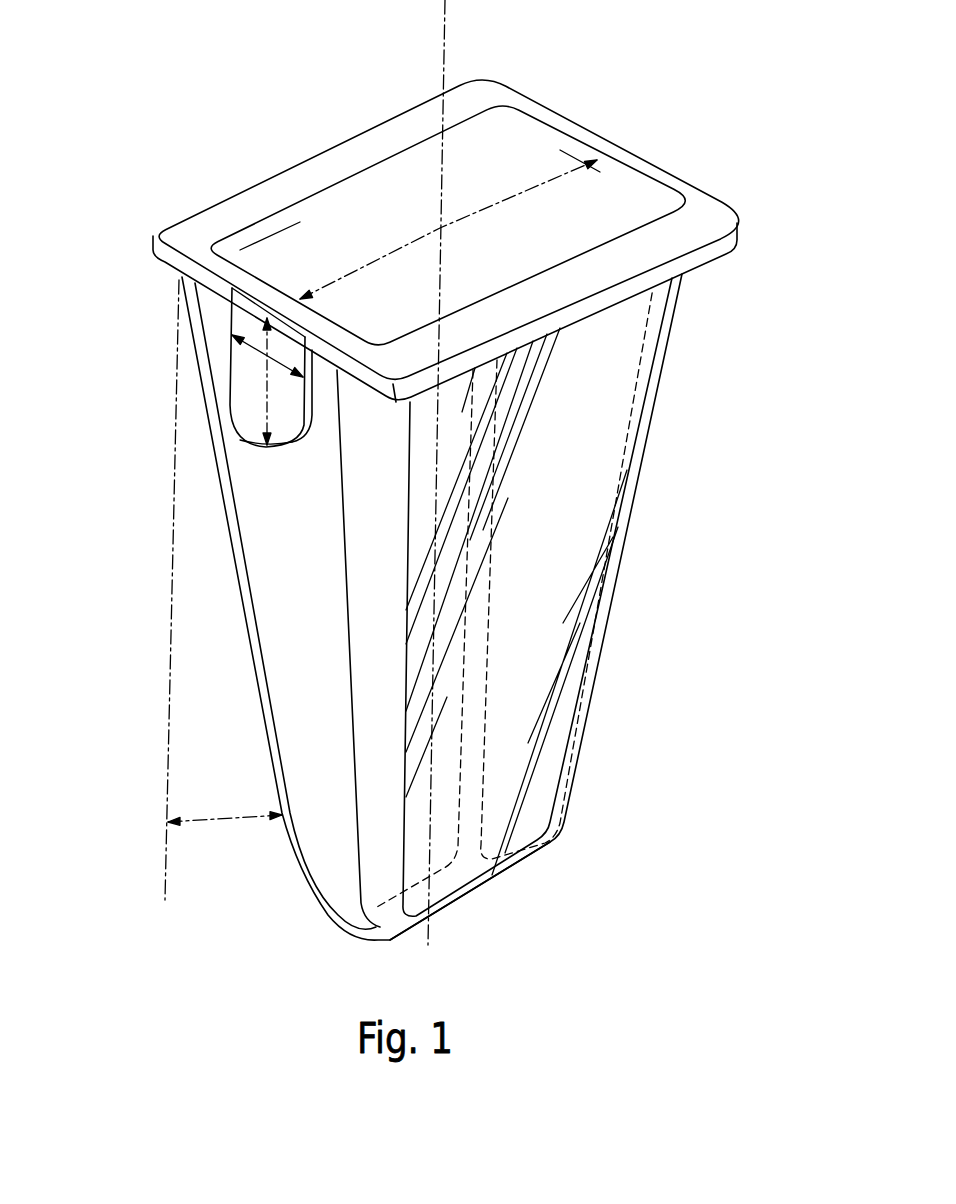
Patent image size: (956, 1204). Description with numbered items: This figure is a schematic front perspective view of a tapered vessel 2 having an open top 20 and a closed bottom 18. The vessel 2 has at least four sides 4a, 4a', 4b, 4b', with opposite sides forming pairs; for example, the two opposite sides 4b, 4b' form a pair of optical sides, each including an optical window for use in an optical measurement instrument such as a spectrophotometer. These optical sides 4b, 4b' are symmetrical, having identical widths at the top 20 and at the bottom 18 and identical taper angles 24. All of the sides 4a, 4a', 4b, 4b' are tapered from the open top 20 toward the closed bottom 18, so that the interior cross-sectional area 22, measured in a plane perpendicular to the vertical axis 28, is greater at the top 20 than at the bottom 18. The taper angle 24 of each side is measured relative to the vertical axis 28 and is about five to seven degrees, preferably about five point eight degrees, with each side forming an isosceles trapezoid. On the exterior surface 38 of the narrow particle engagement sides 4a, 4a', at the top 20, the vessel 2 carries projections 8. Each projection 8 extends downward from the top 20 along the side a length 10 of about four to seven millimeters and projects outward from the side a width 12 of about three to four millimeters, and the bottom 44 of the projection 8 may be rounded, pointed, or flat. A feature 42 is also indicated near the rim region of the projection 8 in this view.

The vessel 2 is at (668, 131).
The side 4a is at (324, 648).
The side 4b is at (537, 597).
The side 4a' is at (604, 140).
The side 4b' is at (255, 185).
The projection 8 is at (241, 372).
The length 10 is at (268, 406).
The width 12 is at (308, 338).
The closed bottom 18 is at (464, 907).
The open top 20 is at (354, 136).
The interior cross-sectional area 22 is at (417, 240).
The taper angle 24 is at (221, 822).
The vertical axis 28 is at (456, 16).
The exterior surface 38 is at (602, 415).
The rim notch 42 is at (263, 298).
The bottom of the projection 44 is at (272, 449).